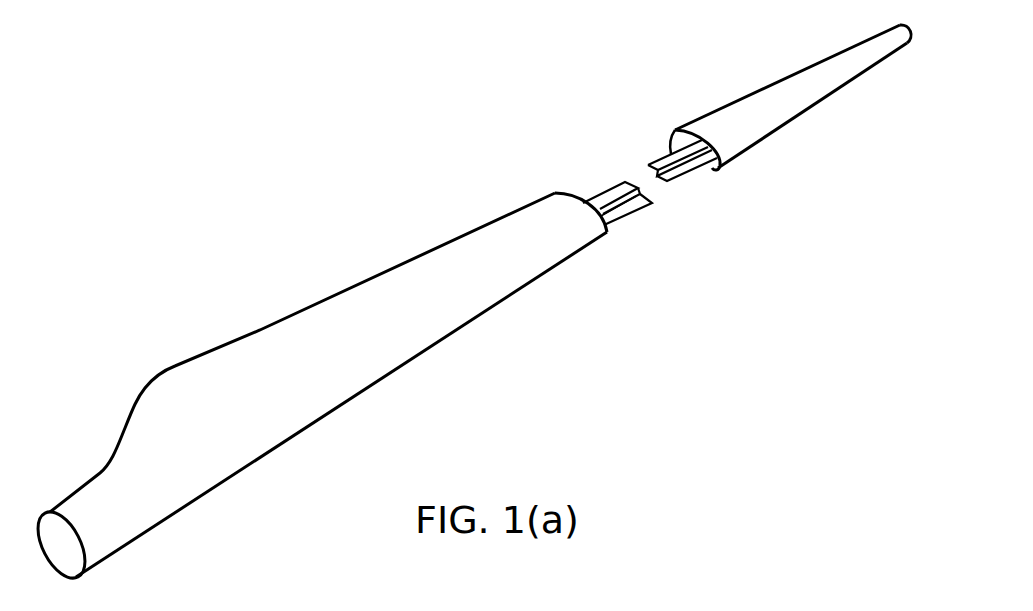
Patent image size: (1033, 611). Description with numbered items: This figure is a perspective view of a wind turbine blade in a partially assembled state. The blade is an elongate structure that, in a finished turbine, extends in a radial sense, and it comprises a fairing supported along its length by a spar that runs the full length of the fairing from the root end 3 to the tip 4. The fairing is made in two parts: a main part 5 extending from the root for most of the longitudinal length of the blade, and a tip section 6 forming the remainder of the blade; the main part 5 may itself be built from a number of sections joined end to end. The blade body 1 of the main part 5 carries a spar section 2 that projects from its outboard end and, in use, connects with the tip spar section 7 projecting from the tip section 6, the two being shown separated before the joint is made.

The inboard blade section body 1 is at (305, 318).
The spar section 2 is at (630, 217).
The root end 3 is at (47, 512).
The tip 4 is at (907, 45).
The main part 5 is at (340, 358).
The tip section 6 is at (783, 111).
The tip spar section 7 is at (665, 159).